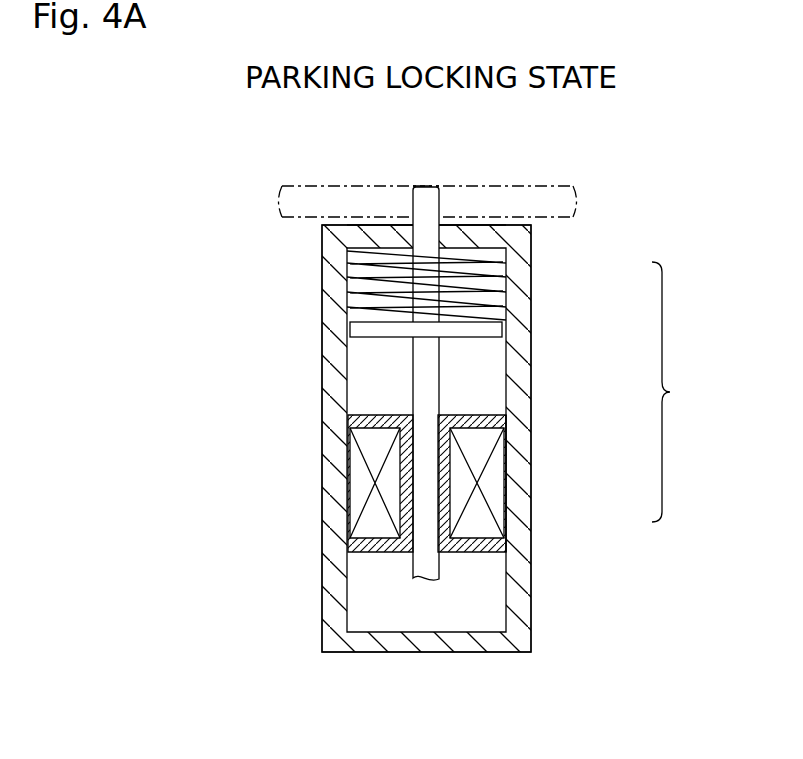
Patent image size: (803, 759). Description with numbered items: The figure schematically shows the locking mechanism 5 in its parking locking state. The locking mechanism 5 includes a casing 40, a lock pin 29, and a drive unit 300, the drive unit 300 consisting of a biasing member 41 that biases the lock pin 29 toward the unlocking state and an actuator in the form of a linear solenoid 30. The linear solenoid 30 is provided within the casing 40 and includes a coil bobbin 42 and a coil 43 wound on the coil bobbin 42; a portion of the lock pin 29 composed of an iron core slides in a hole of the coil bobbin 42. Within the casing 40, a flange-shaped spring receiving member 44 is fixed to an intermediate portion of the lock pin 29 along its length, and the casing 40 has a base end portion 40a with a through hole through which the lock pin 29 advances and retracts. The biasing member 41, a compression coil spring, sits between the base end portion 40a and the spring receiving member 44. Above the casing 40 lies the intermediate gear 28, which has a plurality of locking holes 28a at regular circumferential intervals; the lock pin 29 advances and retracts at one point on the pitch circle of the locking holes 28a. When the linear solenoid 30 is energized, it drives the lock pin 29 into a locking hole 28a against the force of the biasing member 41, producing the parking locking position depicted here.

The locking mechanism 5 is at (545, 578).
The intermediate gear 28 is at (503, 197).
The locking holes 28a is at (415, 184).
The lock pin 29 is at (427, 207).
The linear solenoid 30 is at (506, 515).
The casing 40 is at (335, 590).
The base end portion 40a is at (392, 232).
The biasing member 41 is at (480, 285).
The coil bobbin 42 is at (372, 415).
The coil 43 is at (357, 482).
The spring receiving member 44 is at (362, 331).
The drive unit 300 is at (692, 392).